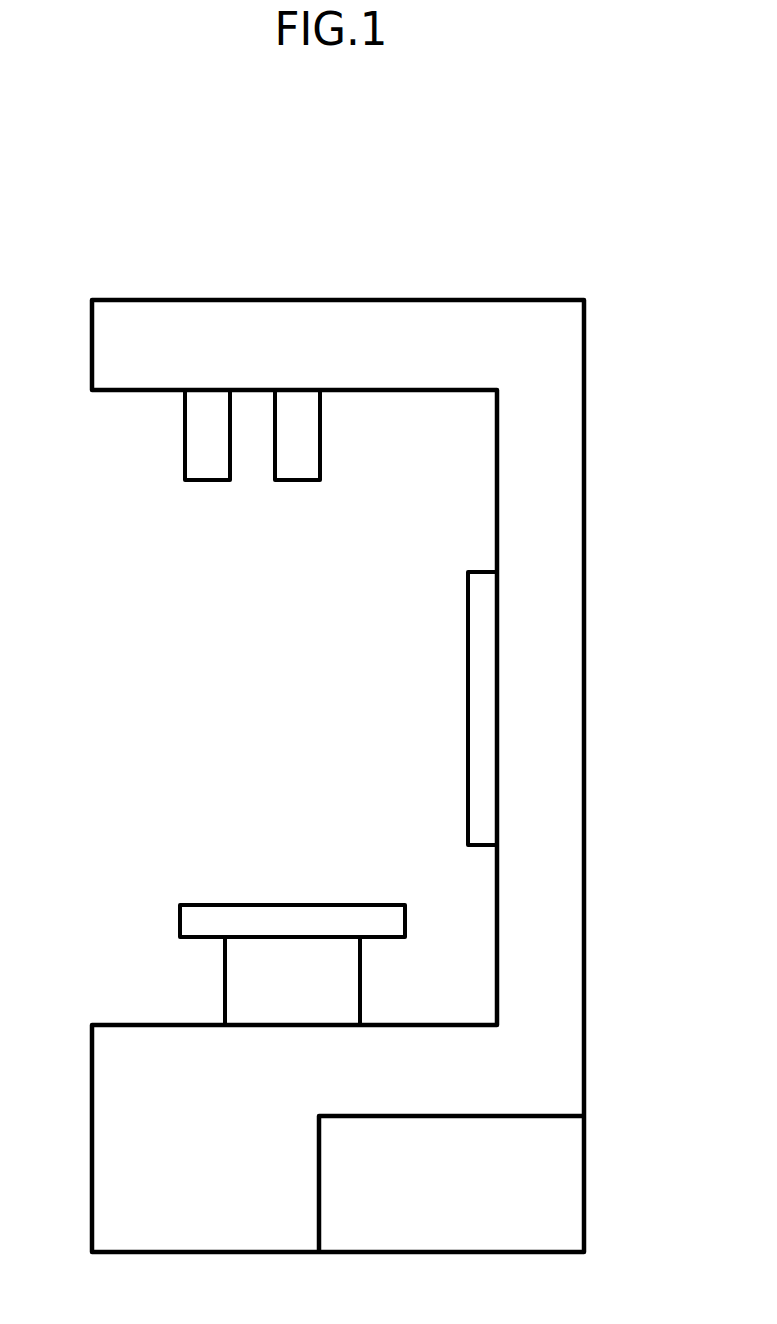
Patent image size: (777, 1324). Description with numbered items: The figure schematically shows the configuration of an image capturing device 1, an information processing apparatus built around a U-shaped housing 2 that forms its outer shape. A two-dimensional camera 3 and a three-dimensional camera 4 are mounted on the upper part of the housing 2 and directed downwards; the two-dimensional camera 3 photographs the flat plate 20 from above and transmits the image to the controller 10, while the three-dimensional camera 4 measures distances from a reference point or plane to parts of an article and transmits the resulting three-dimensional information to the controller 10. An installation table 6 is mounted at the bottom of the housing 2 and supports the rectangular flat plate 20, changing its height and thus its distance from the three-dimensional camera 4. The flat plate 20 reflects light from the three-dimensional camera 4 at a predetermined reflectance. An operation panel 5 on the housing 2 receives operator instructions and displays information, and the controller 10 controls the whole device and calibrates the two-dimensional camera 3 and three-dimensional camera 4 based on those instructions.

The image capturing device 1 is at (398, 256).
The housing 2 is at (586, 583).
The two-dimensional camera 3 is at (206, 485).
The three-dimensional camera 4 is at (295, 485).
The operation panel 5 is at (466, 669).
The installation table 6 is at (223, 980).
The controller 10 is at (318, 1149).
The flat plate 20 is at (299, 904).